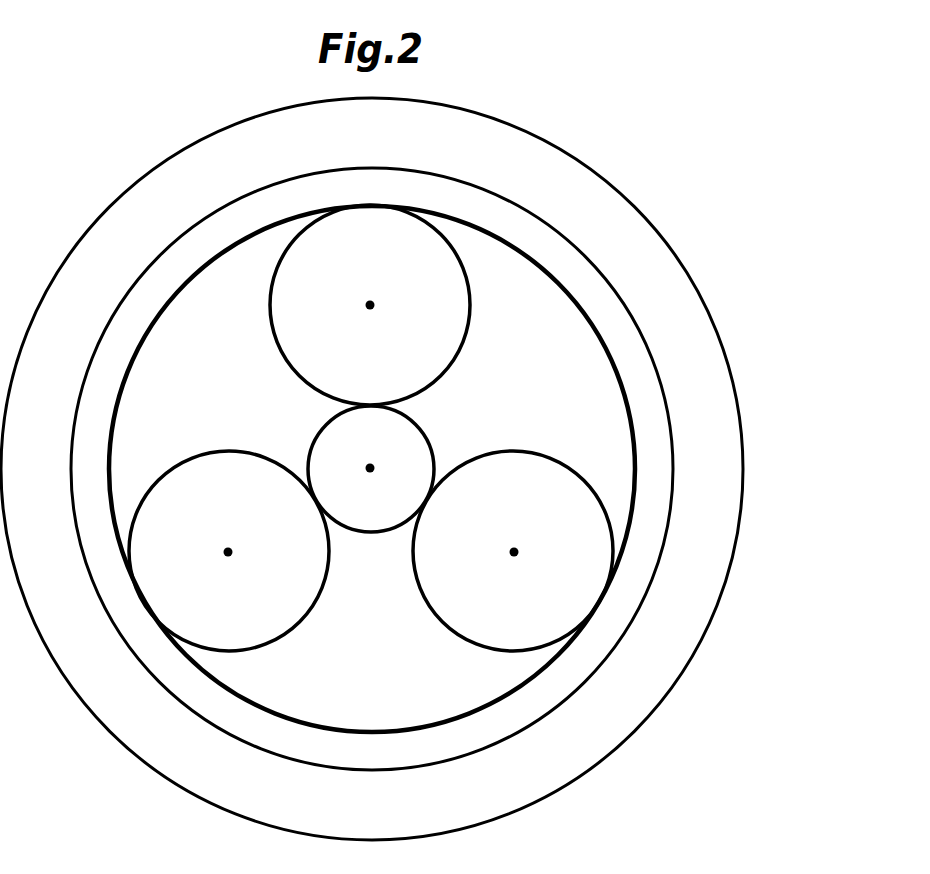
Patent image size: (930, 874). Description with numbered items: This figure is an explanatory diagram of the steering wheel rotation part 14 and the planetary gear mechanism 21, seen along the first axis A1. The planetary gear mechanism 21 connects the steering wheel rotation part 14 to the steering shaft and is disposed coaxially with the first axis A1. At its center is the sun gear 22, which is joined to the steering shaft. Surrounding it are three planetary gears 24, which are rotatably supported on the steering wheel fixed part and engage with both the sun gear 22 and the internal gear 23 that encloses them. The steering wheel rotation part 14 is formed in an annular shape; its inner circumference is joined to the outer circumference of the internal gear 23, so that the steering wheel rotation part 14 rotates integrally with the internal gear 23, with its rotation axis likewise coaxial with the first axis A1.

The steering wheel rotation part 14 is at (585, 162).
The planetary gear mechanism 21 is at (172, 228).
The sun gear 22 is at (413, 432).
The internal gear 23 is at (630, 398).
The planetary gears 24 is at (457, 318).
The first axis A1 is at (370, 470).